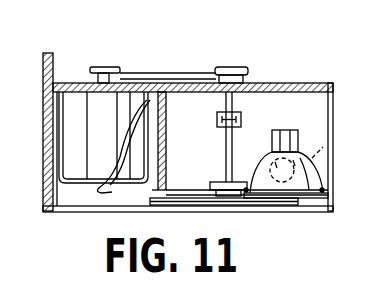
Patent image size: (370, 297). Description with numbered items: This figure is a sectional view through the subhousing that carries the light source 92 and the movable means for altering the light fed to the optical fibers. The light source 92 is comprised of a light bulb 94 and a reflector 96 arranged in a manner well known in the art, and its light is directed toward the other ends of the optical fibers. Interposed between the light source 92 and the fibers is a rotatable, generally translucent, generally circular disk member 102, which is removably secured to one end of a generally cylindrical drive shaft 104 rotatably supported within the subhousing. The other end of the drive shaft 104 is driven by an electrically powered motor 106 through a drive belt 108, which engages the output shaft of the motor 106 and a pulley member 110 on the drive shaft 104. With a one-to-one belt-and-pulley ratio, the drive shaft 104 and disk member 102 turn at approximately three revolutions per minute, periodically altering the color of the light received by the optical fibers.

The light source 92 is at (297, 116).
The light bulb 94 is at (331, 144).
The reflector 96 is at (317, 174).
The disk member 102 is at (263, 209).
The drive shaft 104 is at (234, 98).
The motor 106 is at (78, 103).
The drive belt 108 is at (157, 72).
The pulley member 110 is at (251, 72).